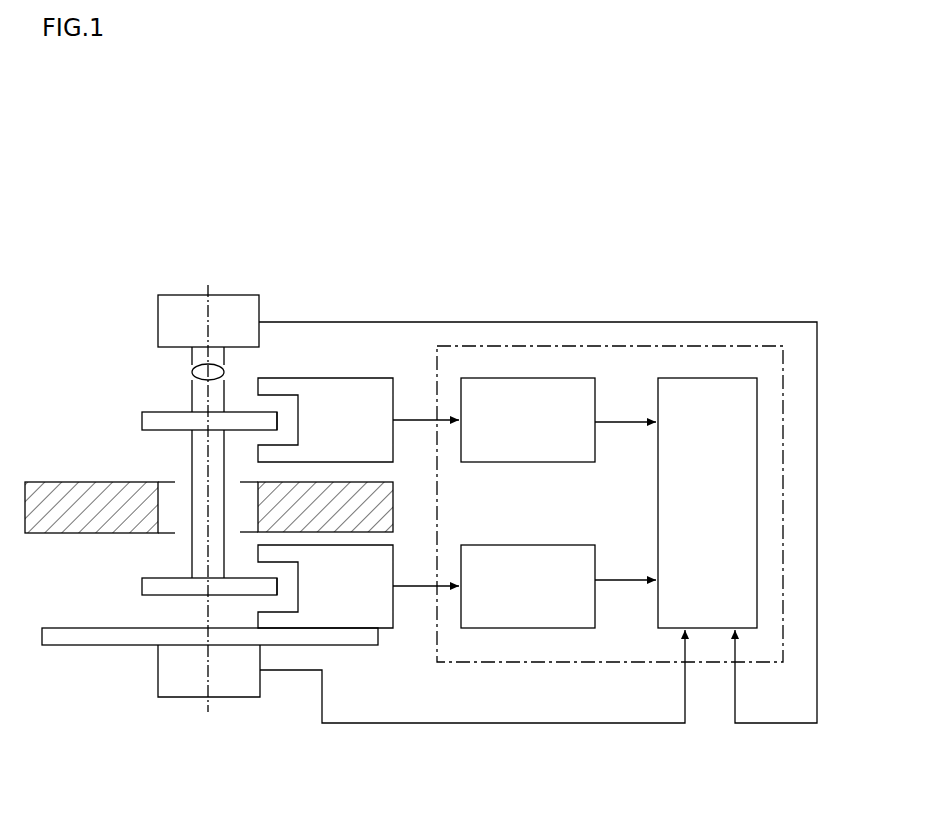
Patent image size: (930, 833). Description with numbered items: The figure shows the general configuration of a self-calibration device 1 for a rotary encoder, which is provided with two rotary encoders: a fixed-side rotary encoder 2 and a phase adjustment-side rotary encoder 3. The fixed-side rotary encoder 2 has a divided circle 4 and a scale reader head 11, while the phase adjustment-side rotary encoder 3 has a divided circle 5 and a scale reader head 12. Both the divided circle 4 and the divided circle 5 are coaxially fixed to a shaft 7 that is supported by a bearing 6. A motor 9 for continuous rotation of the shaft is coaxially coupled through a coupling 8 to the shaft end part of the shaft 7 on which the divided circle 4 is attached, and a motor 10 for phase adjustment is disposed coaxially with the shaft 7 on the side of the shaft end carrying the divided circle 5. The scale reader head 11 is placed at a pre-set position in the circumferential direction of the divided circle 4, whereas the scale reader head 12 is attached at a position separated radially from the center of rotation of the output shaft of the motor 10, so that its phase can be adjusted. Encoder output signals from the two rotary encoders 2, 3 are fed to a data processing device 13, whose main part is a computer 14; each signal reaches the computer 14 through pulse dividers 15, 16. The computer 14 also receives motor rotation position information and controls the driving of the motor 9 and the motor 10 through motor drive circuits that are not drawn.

The self-calibration device 1 is at (657, 288).
The fixed-side rotary encoder 2 is at (320, 350).
The phase adjustment-side rotary encoder 3 is at (324, 666).
The divided circle 4 is at (247, 403).
The divided circle 5 is at (272, 598).
The bearing 6 is at (90, 481).
The shaft 7 is at (186, 452).
The coupling 8 is at (186, 374).
The motor for continuous rotation 9 is at (238, 294).
The motor for phase adjustment 10 is at (152, 671).
The scale reader head 11 is at (333, 377).
The scale reader head 12 is at (316, 614).
The data processing device 13 is at (485, 346).
The computer 14 is at (727, 378).
The pulse divider 15 is at (560, 378).
The pulse divider 16 is at (565, 545).